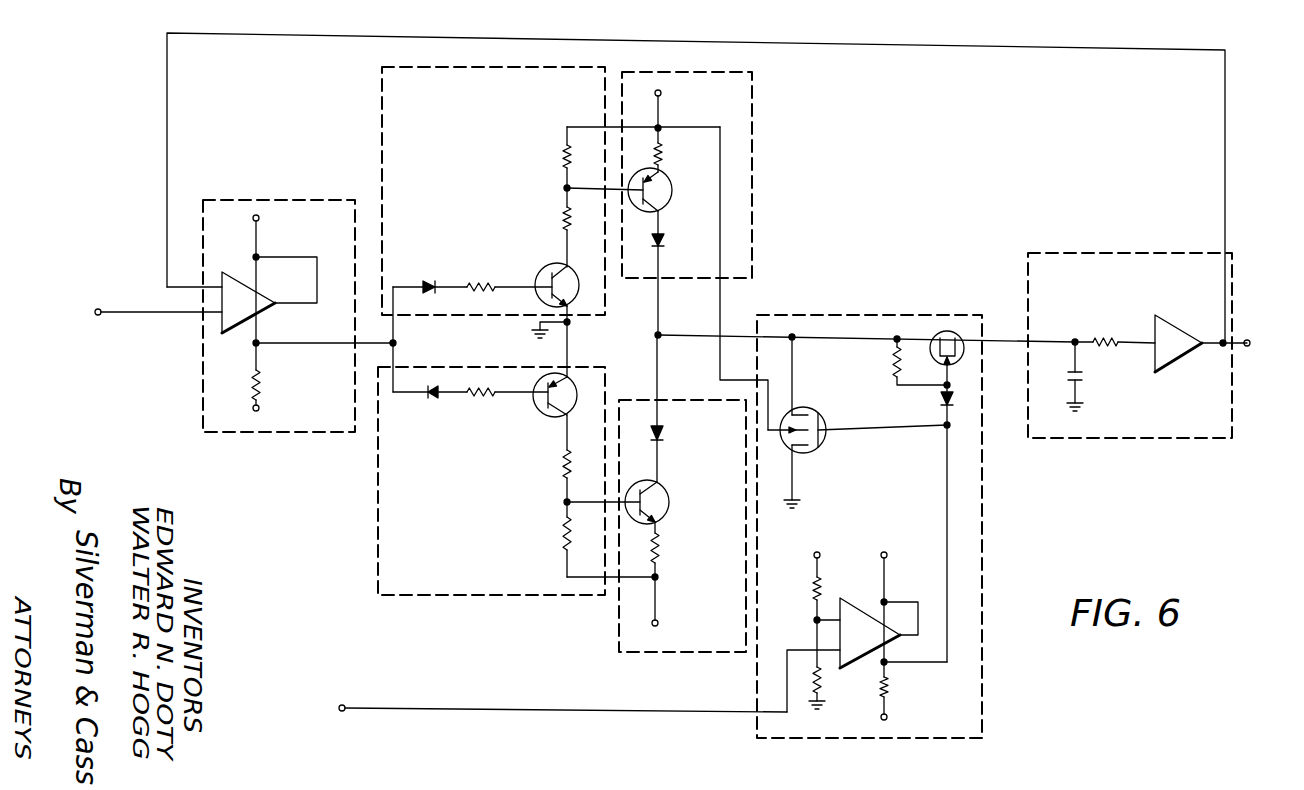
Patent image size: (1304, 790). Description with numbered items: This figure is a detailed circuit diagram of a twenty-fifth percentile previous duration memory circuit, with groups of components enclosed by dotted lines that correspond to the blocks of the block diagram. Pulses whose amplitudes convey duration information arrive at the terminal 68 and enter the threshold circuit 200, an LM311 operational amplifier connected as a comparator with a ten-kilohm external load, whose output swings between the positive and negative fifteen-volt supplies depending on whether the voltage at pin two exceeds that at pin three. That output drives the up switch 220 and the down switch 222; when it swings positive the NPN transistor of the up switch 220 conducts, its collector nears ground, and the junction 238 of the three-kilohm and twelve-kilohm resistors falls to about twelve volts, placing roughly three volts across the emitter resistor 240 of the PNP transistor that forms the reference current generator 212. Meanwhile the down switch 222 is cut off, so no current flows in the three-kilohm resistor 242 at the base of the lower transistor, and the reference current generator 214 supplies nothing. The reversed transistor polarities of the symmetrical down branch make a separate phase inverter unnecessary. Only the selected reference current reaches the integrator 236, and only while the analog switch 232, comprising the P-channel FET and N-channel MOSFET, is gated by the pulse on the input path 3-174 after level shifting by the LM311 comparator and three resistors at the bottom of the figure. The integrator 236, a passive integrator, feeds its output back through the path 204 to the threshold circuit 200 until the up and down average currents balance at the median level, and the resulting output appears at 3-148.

The path 204 is at (342, 36).
The threshold circuit 200 is at (306, 196).
The up switch 220 is at (512, 229).
The down switch 222 is at (459, 457).
The reference current generator 212 is at (712, 203).
The reference current generator 214 is at (617, 634).
The analog switch 232 is at (880, 316).
The integrator 236 is at (1125, 253).
The junction 238 is at (564, 189).
The 150K emitter resistor 240 is at (662, 151).
The 3K resistor 242 is at (554, 540).
The terminal 68X 68 is at (150, 314).
The input path 3-174 is at (448, 708).
The output terminal 3-148 is at (1251, 340).